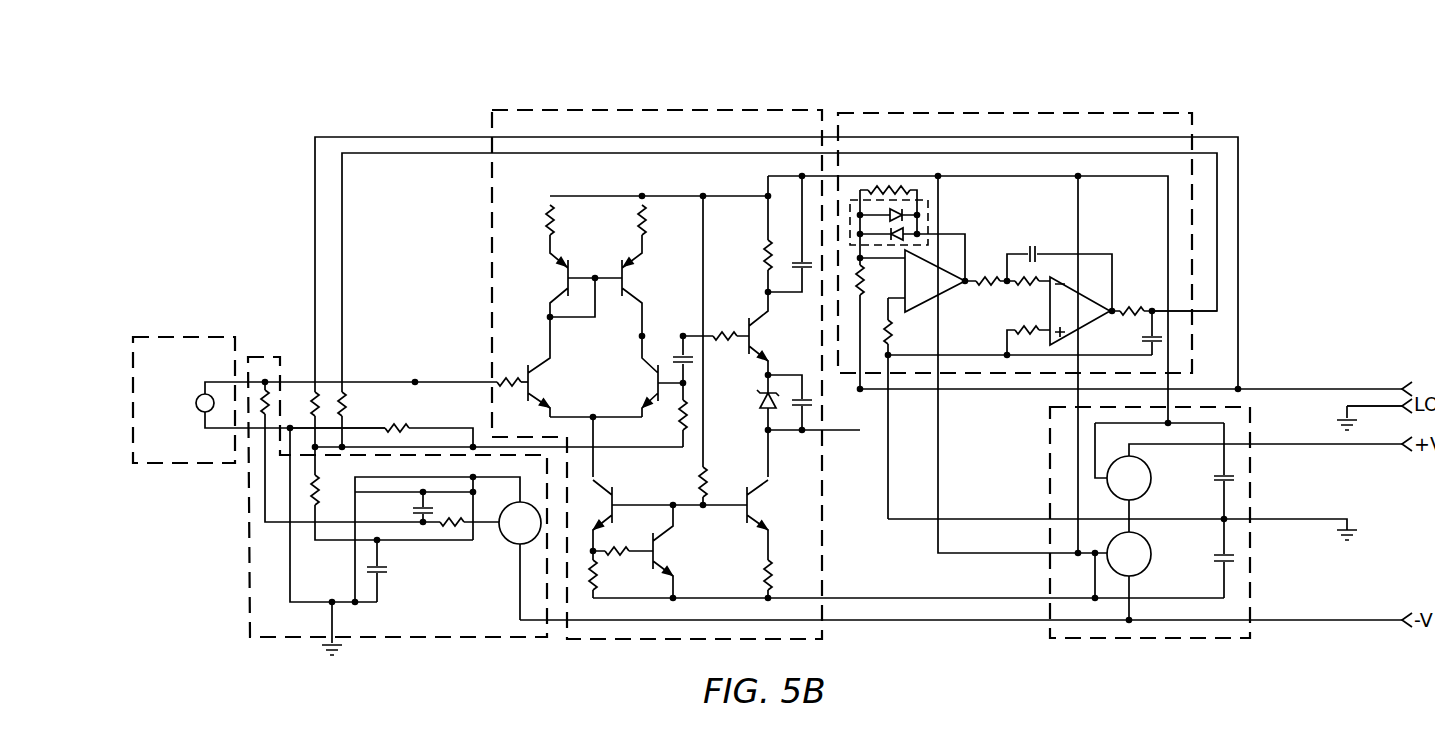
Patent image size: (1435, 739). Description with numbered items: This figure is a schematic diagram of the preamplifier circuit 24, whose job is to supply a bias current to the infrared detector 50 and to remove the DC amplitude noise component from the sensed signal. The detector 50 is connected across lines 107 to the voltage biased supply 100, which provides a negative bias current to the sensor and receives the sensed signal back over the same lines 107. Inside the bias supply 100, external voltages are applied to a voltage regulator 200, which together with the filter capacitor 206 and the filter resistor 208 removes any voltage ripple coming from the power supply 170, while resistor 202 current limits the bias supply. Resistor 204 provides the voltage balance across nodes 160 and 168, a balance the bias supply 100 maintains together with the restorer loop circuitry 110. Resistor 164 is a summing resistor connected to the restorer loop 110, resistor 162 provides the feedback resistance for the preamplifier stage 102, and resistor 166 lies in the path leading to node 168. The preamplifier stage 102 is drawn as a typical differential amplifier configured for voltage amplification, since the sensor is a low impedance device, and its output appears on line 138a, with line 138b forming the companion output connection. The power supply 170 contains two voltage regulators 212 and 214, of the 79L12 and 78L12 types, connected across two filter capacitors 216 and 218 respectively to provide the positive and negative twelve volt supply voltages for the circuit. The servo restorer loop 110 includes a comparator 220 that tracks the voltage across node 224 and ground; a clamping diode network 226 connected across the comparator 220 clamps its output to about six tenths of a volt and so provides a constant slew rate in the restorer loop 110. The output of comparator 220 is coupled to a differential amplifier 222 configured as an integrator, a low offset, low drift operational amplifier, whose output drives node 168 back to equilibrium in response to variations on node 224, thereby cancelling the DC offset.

The preamplifier circuit 24 is at (803, 77).
The detector 50 is at (196, 403).
The bias supply circuit 100 is at (443, 638).
The preamplifier stage 102 is at (597, 110).
The lines 107 is at (226, 402).
The servo restorer loop 110 is at (993, 112).
The output line 138a is at (1292, 389).
The output line 138b is at (1367, 406).
The node 160 is at (415, 381).
The resistor 162 is at (313, 392).
The summing resistor 164 is at (346, 402).
The resistor 166 is at (398, 428).
The node 168 is at (485, 418).
The power supply 170 is at (1250, 421).
The voltage regulator 200 is at (536, 534).
The resistor 202 is at (265, 380).
The resistor 204 is at (342, 480).
The filter capacitor 206 is at (420, 504).
The filter resistor 208 is at (448, 528).
The voltage regulator 212 is at (1140, 476).
The voltage regulator 214 is at (1140, 562).
The filter capacitor 216 is at (1220, 481).
The filter capacitor 218 is at (1220, 565).
The comparator 220 is at (948, 293).
The differential amplifier 222 is at (1068, 306).
The node 224 is at (861, 390).
The clamping diode network 226 is at (930, 212).